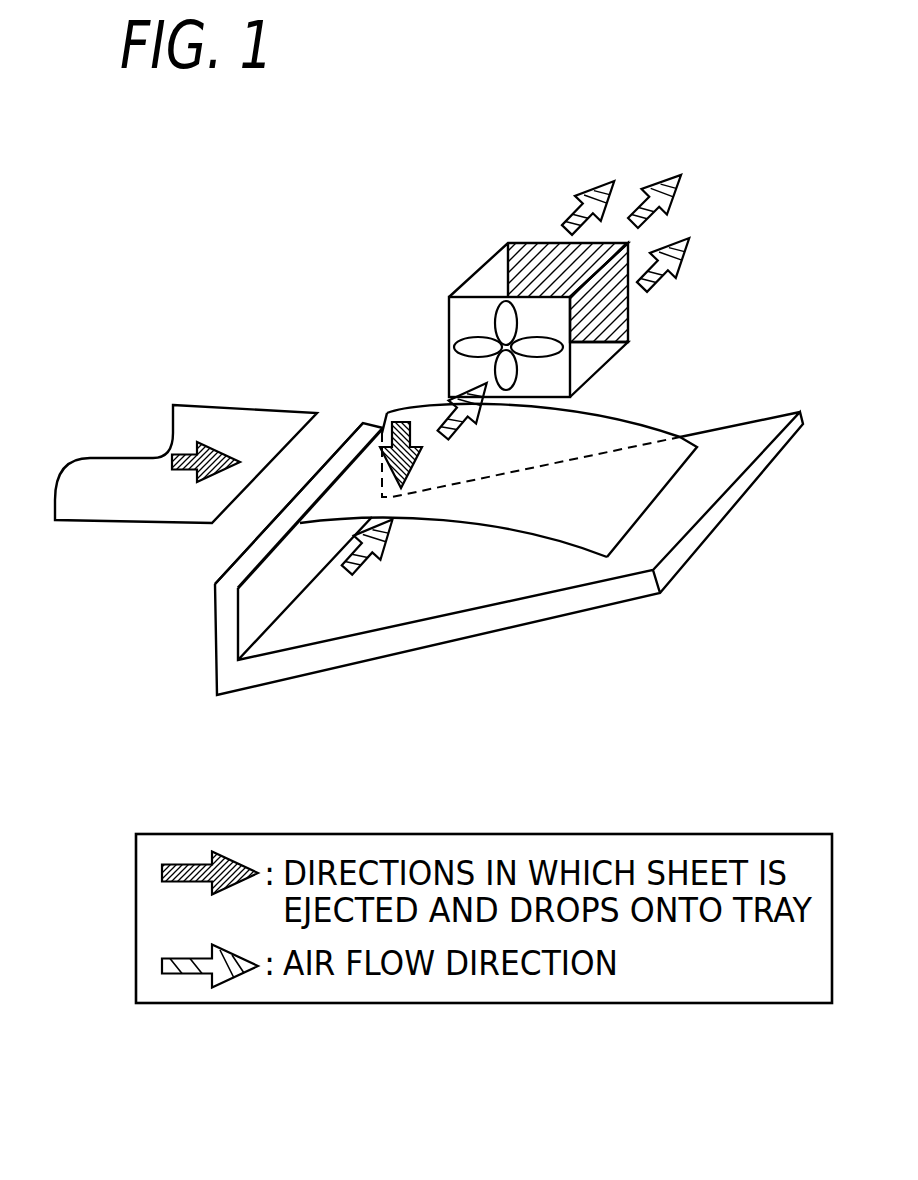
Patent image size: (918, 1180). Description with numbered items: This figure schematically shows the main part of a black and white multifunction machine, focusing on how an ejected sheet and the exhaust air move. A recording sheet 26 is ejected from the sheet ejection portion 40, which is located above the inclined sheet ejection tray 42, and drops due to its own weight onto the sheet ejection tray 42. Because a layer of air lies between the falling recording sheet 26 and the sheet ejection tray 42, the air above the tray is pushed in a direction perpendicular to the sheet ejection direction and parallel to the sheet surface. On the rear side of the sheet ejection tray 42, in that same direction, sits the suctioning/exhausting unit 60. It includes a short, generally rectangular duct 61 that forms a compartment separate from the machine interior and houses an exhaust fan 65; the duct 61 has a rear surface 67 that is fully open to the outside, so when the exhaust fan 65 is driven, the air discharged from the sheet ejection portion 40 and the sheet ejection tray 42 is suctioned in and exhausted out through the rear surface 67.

The recording sheet 26 is at (217, 415).
The sheet ejection portion 40 is at (290, 578).
The sheet ejection tray 42 is at (670, 525).
The suctioning/exhausting unit 60 is at (542, 292).
The duct 61 is at (628, 373).
The exhaust fan 65 is at (422, 343).
The rear surface 67 is at (656, 317).